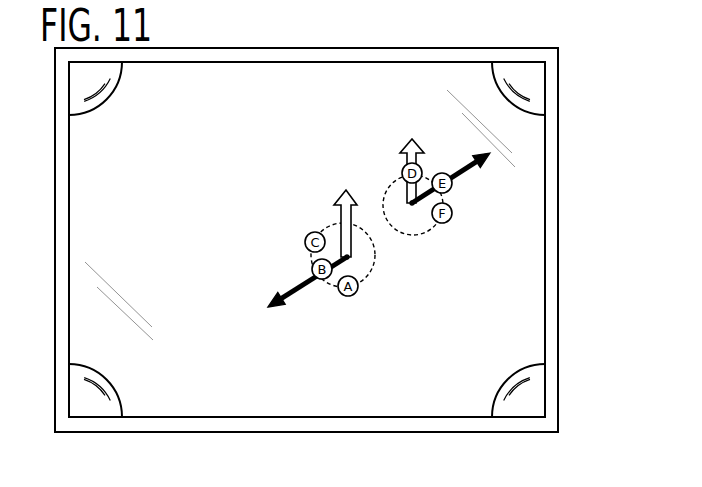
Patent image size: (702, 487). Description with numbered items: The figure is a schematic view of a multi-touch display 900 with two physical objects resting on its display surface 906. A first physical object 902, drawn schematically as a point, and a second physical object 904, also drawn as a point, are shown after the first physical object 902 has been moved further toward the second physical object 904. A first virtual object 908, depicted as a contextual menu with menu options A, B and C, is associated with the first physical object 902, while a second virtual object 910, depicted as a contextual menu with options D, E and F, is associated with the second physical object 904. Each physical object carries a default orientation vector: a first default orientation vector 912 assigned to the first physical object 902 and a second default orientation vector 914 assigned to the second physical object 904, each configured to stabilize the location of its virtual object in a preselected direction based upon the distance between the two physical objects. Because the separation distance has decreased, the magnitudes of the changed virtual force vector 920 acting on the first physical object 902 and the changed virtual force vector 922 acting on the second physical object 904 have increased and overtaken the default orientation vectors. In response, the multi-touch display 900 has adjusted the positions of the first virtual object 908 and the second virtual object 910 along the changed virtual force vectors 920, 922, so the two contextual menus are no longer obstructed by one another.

The multi-touch display 900 is at (558, 186).
The display surface 906 is at (545, 253).
The first physical object 902 is at (352, 256).
The first virtual object 908 is at (368, 278).
The first default orientation vector 912 is at (337, 203).
The changed virtual force vector 920 is at (282, 297).
The second physical object 904 is at (407, 205).
The second virtual object 910 is at (433, 234).
The second default orientation vector 914 is at (422, 152).
The changed virtual force vector 922 is at (460, 170).